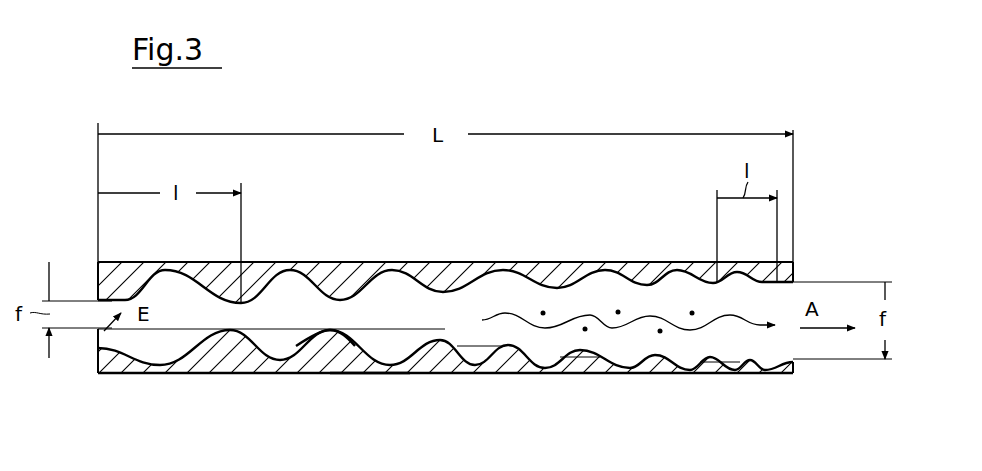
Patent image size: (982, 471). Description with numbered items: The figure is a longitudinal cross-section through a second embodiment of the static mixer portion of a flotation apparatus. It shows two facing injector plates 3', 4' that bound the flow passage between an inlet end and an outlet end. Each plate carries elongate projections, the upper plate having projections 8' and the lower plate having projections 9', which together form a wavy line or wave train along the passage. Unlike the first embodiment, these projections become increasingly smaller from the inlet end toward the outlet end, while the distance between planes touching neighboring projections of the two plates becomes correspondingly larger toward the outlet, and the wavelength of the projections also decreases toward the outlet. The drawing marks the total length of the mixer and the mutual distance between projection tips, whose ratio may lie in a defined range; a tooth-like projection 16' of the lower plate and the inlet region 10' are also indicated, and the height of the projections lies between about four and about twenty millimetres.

The injector plate 3' is at (370, 228).
The injector plate 4' is at (370, 410).
The elongate projections 8' is at (463, 303).
The elongate projections 9' is at (463, 347).
The inlet end of lower wall 10' is at (69, 379).
The tooth / projection of lower wall 16' is at (325, 387).